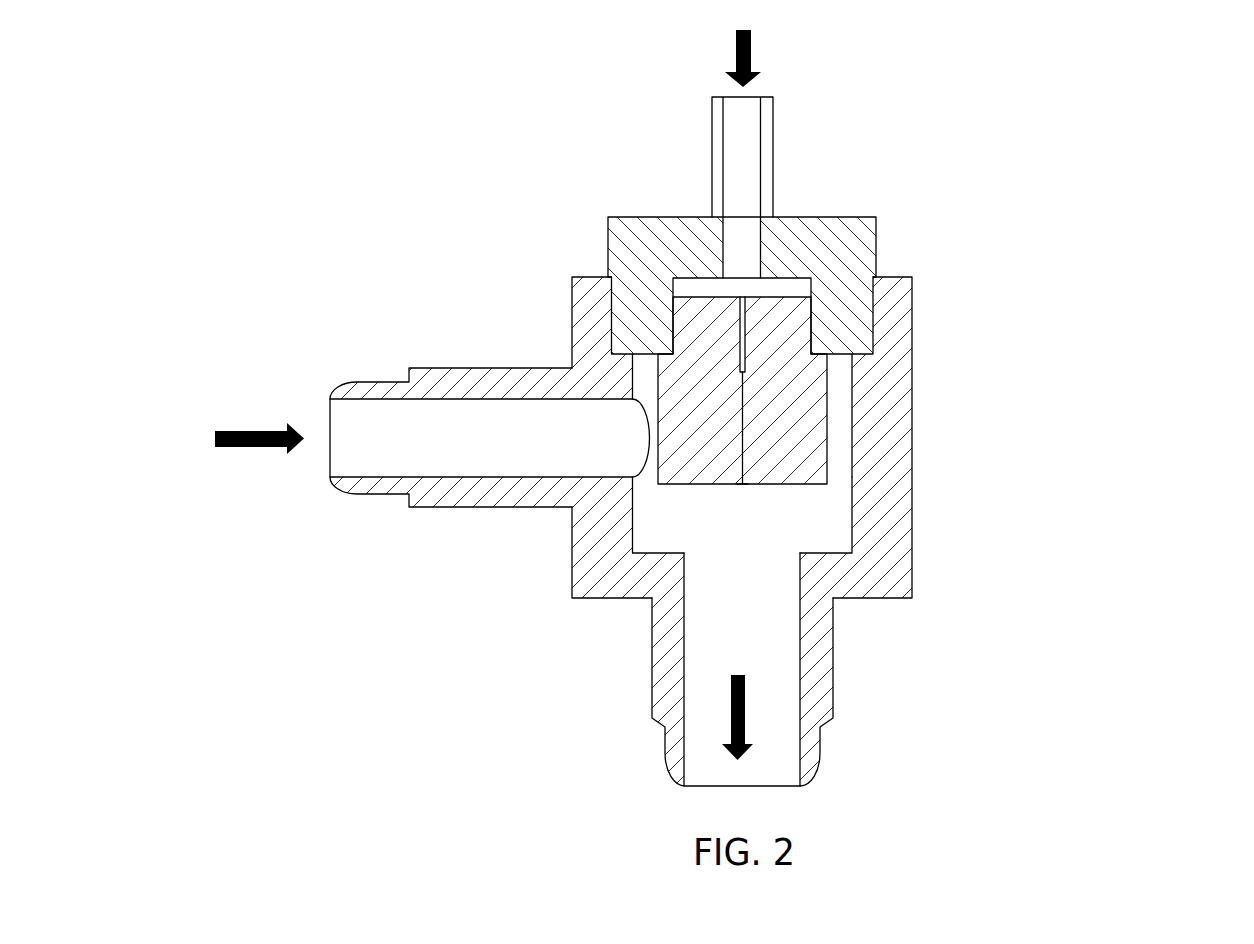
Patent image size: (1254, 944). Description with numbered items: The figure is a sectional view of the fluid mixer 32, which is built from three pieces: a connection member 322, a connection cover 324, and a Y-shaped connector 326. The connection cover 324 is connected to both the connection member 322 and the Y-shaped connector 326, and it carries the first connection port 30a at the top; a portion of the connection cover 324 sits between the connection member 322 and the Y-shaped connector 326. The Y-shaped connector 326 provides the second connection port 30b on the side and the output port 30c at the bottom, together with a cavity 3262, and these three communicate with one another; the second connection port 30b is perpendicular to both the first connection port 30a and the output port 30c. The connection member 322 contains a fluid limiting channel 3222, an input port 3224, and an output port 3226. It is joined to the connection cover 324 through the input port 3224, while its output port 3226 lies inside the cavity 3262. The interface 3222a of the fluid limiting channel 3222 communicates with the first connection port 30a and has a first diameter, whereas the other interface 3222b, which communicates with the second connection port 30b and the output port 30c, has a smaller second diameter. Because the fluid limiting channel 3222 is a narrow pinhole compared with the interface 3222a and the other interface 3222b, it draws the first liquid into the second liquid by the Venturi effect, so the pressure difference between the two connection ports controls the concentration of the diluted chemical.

The fluid mixer 32 is at (433, 170).
The first connection port 30a is at (775, 128).
The second connection port 30b is at (384, 482).
The output port 30c is at (808, 777).
The connection member 322 is at (1089, 222).
The fluid limiting channel 3222 is at (745, 454).
The interface 3222a is at (746, 298).
The other interface 3222b is at (743, 486).
The input port 3224 is at (765, 322).
The output port 3226 is at (795, 470).
The connection cover 324 is at (828, 230).
The Y-shaped connector 326 is at (590, 573).
The cavity 3262 is at (657, 553).